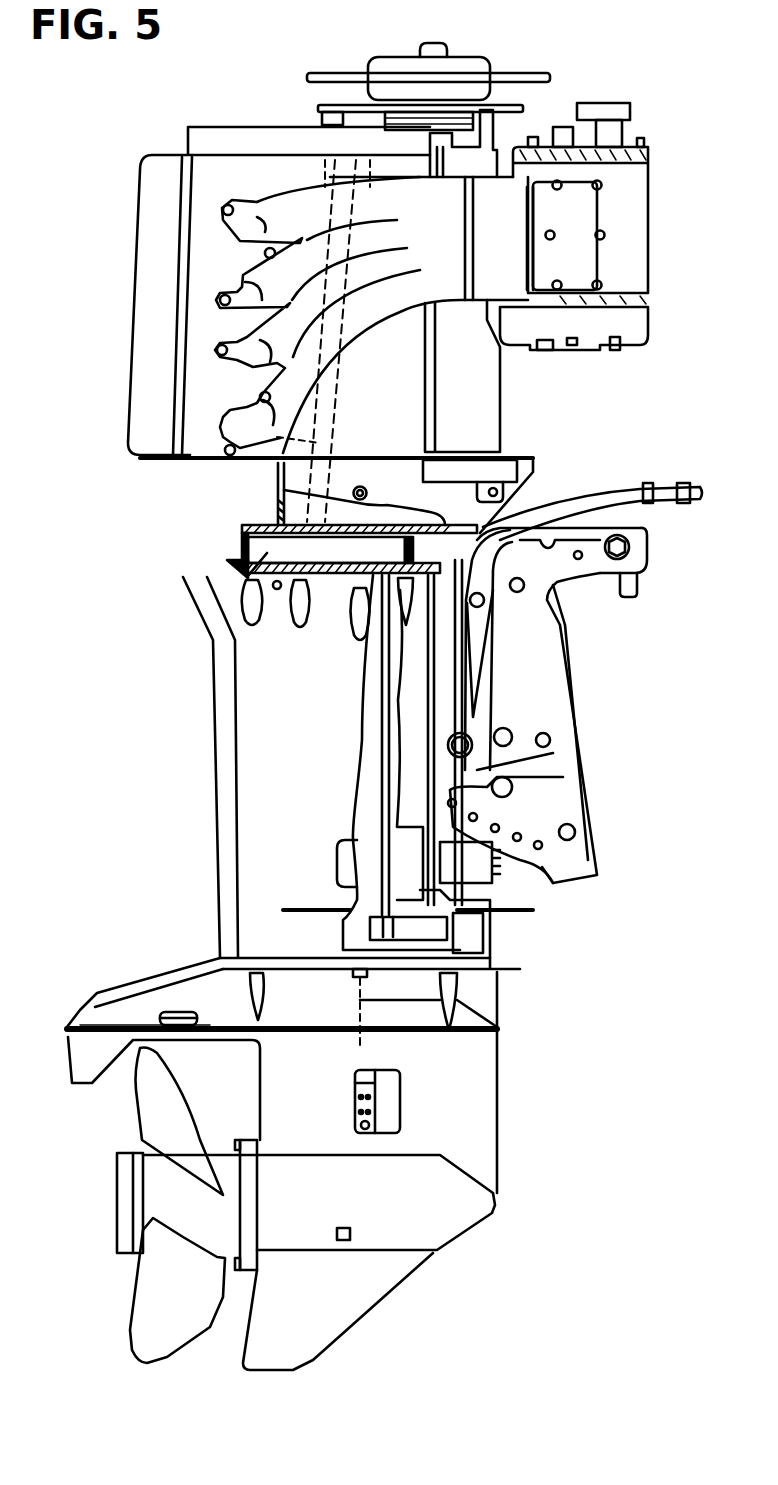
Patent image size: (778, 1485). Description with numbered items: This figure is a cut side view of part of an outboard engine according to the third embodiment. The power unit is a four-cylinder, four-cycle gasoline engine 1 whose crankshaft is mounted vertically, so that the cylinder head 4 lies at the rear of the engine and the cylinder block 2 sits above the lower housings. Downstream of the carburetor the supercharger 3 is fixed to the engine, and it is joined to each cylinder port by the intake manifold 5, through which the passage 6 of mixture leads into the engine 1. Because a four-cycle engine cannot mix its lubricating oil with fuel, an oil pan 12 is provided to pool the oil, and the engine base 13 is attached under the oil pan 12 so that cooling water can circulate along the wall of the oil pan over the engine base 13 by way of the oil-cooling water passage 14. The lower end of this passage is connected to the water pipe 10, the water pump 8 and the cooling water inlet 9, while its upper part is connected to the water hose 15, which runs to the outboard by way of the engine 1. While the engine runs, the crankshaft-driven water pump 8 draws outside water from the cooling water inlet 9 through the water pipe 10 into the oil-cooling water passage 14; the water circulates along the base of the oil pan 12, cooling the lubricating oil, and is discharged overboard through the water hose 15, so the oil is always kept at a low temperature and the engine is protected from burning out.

The engine 1 is at (289, 104).
The cylinder block 2 is at (280, 463).
The supercharger 3 is at (633, 227).
The cylinder head 4 is at (207, 157).
The intake manifold 5 is at (297, 200).
The passage of mixture 6 is at (326, 548).
The water pump 8 is at (343, 933).
The cooling water inlet 9 is at (373, 1097).
The water pipe 10 is at (380, 763).
The oil pan 12 is at (277, 514).
The engine base 13 is at (240, 545).
The oil-cooling water passage 14 is at (240, 580).
The water hose 15 is at (227, 470).